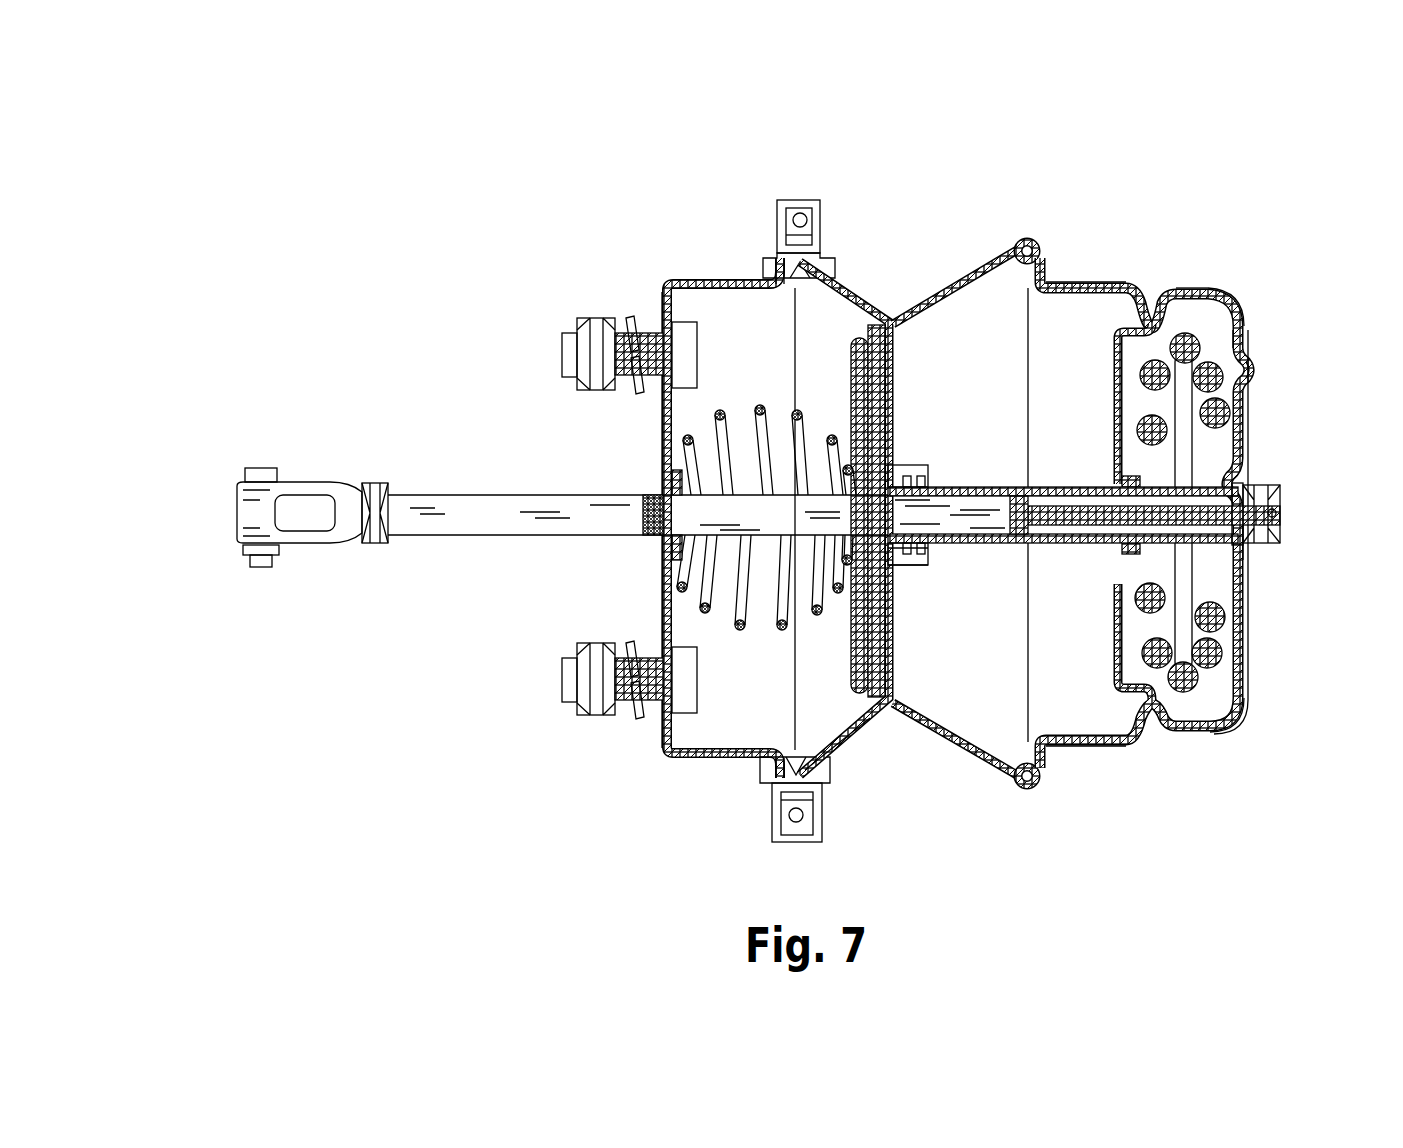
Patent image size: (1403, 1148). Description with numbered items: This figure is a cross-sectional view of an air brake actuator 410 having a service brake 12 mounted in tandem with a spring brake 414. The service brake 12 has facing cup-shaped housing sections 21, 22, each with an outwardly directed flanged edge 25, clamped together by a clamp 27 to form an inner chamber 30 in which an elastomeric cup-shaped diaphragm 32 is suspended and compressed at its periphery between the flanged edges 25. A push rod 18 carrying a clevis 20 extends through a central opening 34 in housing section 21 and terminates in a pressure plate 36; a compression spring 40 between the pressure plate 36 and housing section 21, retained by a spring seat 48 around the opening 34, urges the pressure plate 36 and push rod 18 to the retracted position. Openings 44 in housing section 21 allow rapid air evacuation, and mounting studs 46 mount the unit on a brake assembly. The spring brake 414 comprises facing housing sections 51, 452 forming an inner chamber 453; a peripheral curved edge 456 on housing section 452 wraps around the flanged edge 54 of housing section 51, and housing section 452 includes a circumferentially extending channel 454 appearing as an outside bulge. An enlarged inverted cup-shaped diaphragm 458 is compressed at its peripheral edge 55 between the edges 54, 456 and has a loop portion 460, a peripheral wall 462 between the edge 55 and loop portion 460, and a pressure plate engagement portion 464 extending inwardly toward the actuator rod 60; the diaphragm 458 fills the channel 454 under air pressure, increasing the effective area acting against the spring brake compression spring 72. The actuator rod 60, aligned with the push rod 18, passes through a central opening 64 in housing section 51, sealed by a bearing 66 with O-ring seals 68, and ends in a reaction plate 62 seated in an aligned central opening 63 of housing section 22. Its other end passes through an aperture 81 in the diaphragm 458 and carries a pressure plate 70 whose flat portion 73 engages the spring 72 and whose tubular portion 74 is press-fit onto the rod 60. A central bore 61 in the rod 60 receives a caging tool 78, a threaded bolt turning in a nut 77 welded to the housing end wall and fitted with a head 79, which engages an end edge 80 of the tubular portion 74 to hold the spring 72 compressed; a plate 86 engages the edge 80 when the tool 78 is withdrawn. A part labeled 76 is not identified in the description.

The air brake actuator 410 is at (962, 163).
The service brake portion 12 is at (688, 262).
The service brake push rod 18 is at (438, 500).
The clevis 20 is at (300, 482).
The cup-shaped housing section 21 is at (660, 292).
The cup-shaped housing section 22 is at (835, 282).
The flanged edge 25 is at (830, 777).
The clamp 27 is at (775, 830).
The service brake inner chamber 30 is at (792, 326).
The cup-shaped diaphragm 32 is at (858, 712).
The central opening 34 is at (652, 497).
The pressure plate 36 is at (851, 370).
The compression spring 40 is at (797, 432).
The openings 44 is at (740, 752).
The mounting studs 46 is at (562, 680).
The spring seat 48 is at (652, 535).
The cup-shaped housing section 51 is at (960, 292).
The flanged edge 54 is at (1015, 757).
The peripheral edge 55 is at (1042, 276).
The actuator rod 60 is at (925, 468).
The central bore 61 is at (950, 500).
The reaction plate 62 is at (880, 430).
The central opening 63 is at (885, 372).
The central opening 64 is at (900, 562).
The bearing 66 is at (905, 550).
The O-ring seals 68 is at (925, 552).
The pressure plate 70 is at (1178, 330).
The spring brake compression spring 72 is at (1250, 368).
The flat portion 73 is at (1114, 600).
The tubular portion 74 is at (1232, 480).
The flange case wall 76 is at (895, 302).
The nut 77 is at (1265, 545).
The brake release tool 78 is at (1112, 512).
The head 79 is at (1282, 528).
The end edge 80 is at (1245, 488).
The aperture 81 is at (1120, 488).
The plate 86 is at (1020, 522).
The spring brake 414 is at (1118, 263).
The cup-shaped housing section 452 is at (1214, 300).
The inner chamber 453 is at (1090, 356).
The channel 454 is at (1130, 284).
The peripheral curved edge 456 is at (1040, 783).
The inverted cup-shaped diaphragm 458 is at (1105, 742).
The loop portion 460 is at (1190, 730).
The peripheral wall 462 is at (1092, 288).
The pressure plate engagement portion 464 is at (1114, 420).